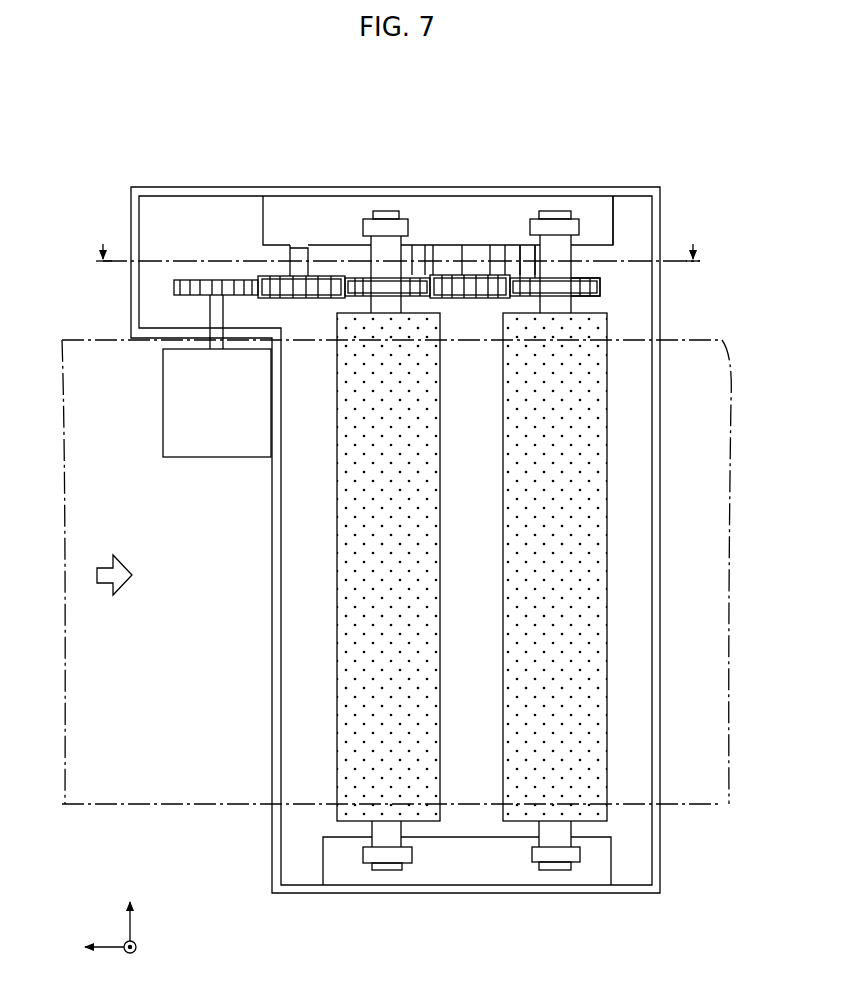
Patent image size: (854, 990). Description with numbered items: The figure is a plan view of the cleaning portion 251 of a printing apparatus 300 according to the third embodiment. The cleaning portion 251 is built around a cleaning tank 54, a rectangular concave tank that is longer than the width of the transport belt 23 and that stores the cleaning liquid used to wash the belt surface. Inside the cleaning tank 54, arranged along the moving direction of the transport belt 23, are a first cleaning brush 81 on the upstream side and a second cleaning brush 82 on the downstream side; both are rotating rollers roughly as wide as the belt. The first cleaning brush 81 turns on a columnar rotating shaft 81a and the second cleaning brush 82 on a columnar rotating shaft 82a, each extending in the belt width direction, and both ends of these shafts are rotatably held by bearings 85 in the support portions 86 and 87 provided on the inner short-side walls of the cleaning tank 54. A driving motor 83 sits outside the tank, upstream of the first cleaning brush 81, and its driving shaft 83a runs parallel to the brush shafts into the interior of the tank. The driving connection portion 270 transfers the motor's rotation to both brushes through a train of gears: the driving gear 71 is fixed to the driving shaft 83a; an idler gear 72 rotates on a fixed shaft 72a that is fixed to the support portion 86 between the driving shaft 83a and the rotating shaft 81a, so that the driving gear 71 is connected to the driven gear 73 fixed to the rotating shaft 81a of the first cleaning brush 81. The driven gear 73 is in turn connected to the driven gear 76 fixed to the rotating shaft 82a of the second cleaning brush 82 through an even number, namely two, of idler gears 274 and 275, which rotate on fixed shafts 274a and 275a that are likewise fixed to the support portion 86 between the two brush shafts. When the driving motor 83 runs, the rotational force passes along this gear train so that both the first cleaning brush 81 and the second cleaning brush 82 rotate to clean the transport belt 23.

The printing apparatus 300 is at (710, 99).
The cleaning portion 251 is at (662, 171).
The cleaning tank 54 is at (656, 410).
The transport belt 23 is at (703, 340).
The driving connection portion 270 is at (151, 296).
The driving gear 71 is at (203, 280).
The idler gear 72 is at (268, 250).
The fixed shaft 72a is at (293, 274).
The driven gear 73 is at (358, 276).
The idler gear 274 is at (462, 273).
The fixed shaft 274a is at (413, 265).
The idler gear 275 is at (500, 278).
The fixed shaft 275a is at (528, 275).
The driven gear 76 is at (575, 278).
The bearing 85 is at (378, 218).
The support portion 86 is at (617, 222).
The first cleaning brush 81 is at (337, 644).
The rotating shaft 81a is at (370, 826).
The second cleaning brush 82 is at (607, 460).
The rotating shaft 82a is at (573, 824).
The driving motor 83 is at (215, 448).
The driving shaft 83a is at (212, 318).
The support portion 87 is at (615, 862).